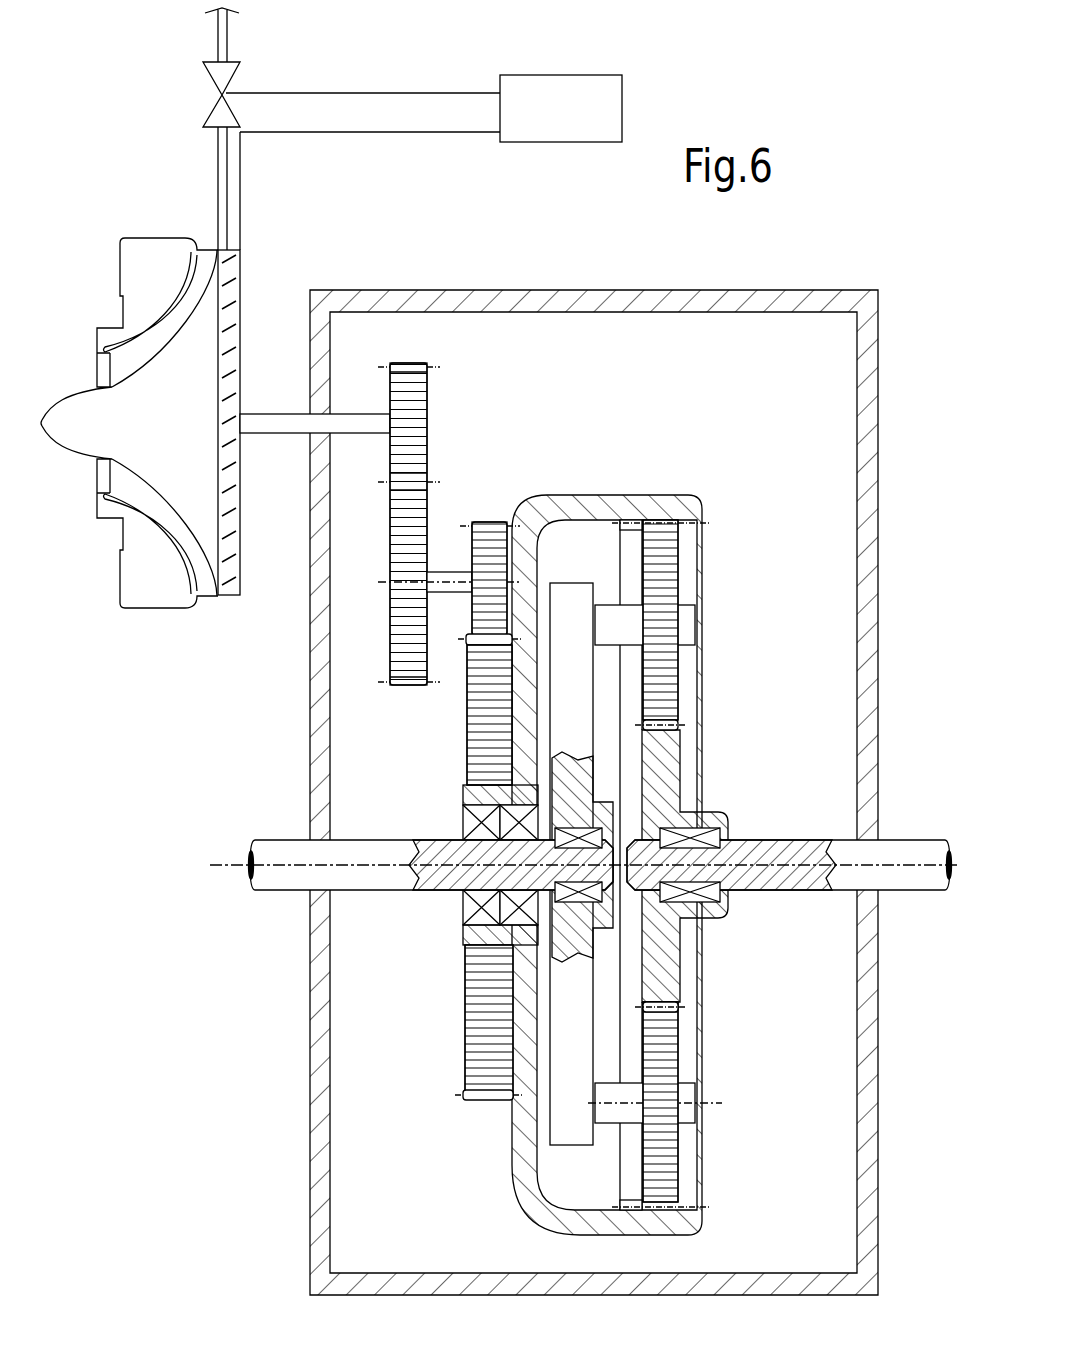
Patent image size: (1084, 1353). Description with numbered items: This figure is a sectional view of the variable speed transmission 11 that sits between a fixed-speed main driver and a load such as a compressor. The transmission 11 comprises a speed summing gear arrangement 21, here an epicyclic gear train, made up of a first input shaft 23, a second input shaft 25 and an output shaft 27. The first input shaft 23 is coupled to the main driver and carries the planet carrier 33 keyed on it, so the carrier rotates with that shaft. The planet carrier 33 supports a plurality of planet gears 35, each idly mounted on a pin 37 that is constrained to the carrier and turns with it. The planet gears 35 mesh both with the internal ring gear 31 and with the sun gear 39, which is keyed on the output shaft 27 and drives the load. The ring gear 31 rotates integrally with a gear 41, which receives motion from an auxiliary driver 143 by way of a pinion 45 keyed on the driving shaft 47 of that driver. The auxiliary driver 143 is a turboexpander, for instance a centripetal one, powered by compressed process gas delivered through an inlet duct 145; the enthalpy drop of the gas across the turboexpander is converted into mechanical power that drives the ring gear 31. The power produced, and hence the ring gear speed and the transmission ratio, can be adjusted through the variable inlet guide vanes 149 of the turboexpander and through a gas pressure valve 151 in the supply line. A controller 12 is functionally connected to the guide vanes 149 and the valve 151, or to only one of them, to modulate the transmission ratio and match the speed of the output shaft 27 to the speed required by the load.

The variable speed transmission 11 is at (803, 268).
The controller 12 is at (580, 130).
The speed summing gear arrangement 21 is at (683, 480).
The first input shaft 23 is at (368, 855).
The second input shaft 25 is at (466, 935).
The output shaft 27 is at (816, 855).
The ring gear 31 is at (607, 500).
The planet carrier 33 is at (566, 612).
The planet gear 35 is at (662, 553).
The pin 37 is at (686, 624).
The sun gear 39 is at (664, 956).
The gear 41 is at (480, 743).
The pinion 45 is at (485, 540).
The driving shaft 47 is at (286, 425).
The auxiliary driver 143 is at (211, 603).
The inlet duct 145 is at (218, 181).
The variable inlet guide vanes 149 is at (228, 535).
The gas pressure valve 151 is at (220, 116).